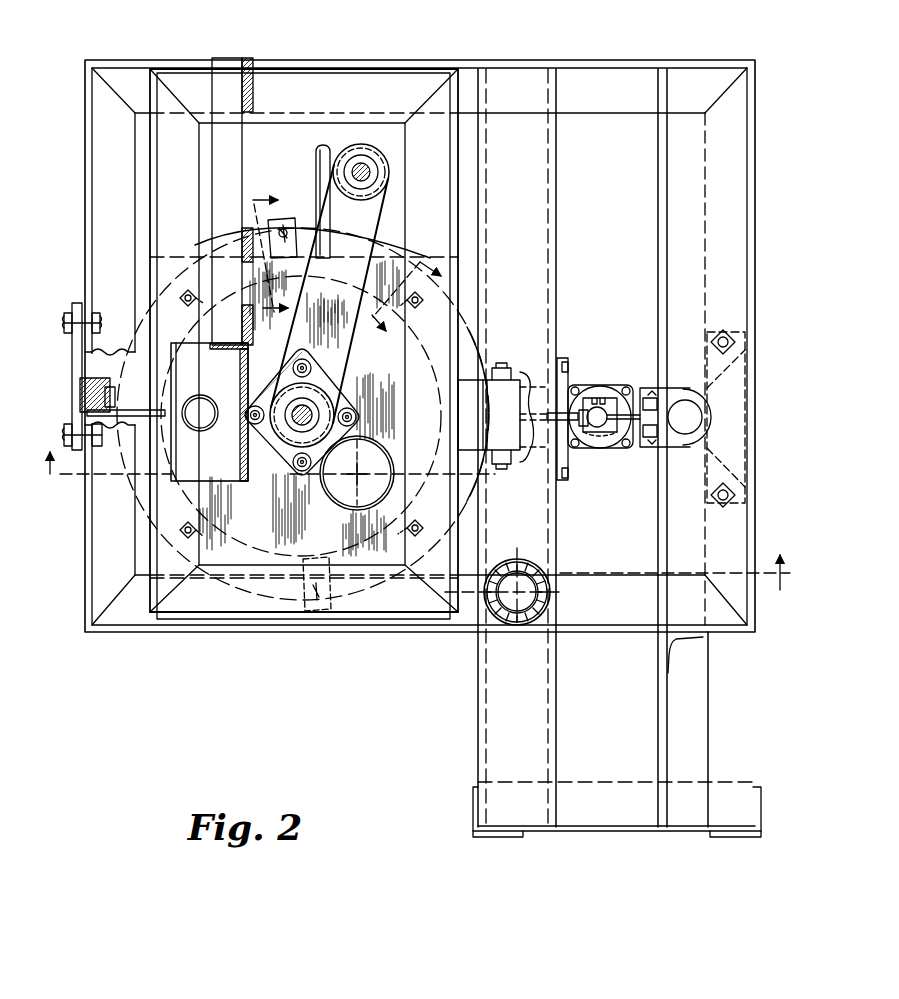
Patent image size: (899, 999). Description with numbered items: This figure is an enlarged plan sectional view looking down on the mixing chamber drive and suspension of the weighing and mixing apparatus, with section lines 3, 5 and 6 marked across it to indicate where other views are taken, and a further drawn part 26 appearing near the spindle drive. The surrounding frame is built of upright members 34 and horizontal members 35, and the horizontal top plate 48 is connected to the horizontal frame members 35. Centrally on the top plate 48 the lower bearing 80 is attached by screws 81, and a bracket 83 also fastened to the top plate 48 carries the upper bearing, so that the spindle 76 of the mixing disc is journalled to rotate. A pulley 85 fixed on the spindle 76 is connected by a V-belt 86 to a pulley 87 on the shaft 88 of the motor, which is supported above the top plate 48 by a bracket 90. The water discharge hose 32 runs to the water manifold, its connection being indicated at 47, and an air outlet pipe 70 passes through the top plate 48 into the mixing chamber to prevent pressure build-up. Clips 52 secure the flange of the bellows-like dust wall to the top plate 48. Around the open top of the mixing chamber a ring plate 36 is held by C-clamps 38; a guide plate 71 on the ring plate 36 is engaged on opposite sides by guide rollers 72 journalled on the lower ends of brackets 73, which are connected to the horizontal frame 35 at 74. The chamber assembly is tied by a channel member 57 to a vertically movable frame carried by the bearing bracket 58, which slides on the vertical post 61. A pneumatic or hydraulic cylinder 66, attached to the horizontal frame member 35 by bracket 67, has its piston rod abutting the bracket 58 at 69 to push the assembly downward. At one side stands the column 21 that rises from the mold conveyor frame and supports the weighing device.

The section line 3- 3 is at (417, 521).
The section line 5- 5 is at (270, 257).
The section line 6- 6 is at (406, 295).
The column 21 is at (528, 618).
The roller 26 is at (385, 457).
The water discharge hose 32 is at (318, 166).
The upright members 34 is at (473, 812).
The horizontal members 35 is at (489, 78).
The ring plate 36 is at (130, 367).
The C-clamps 38 is at (285, 218).
The hose connection 47 is at (330, 270).
The horizontal top plate 48 is at (380, 270).
The clips 52 is at (181, 304).
The channel member 57 is at (486, 345).
The bearing bracket 58 is at (641, 442).
The vertical post 61 is at (680, 432).
The pneumatic or hydraulic cylinder 66 is at (597, 393).
The bracket 67 is at (560, 360).
The piston rod abutment 69 is at (615, 383).
The air outlet pipe 70 is at (203, 397).
The guide plate 71 is at (88, 413).
The guide rollers 72 is at (80, 394).
The brackets 73 is at (75, 352).
The bracket connection 74 is at (97, 320).
The spindle 76 is at (310, 412).
The lower bearing 80 is at (280, 448).
The screws 81 is at (308, 363).
The bracket 83 is at (247, 458).
The pulley 85 is at (315, 438).
The V-belt 86 is at (318, 385).
The pulley 87 is at (390, 172).
The shaft 88 is at (367, 166).
The bracket 90 is at (256, 101).